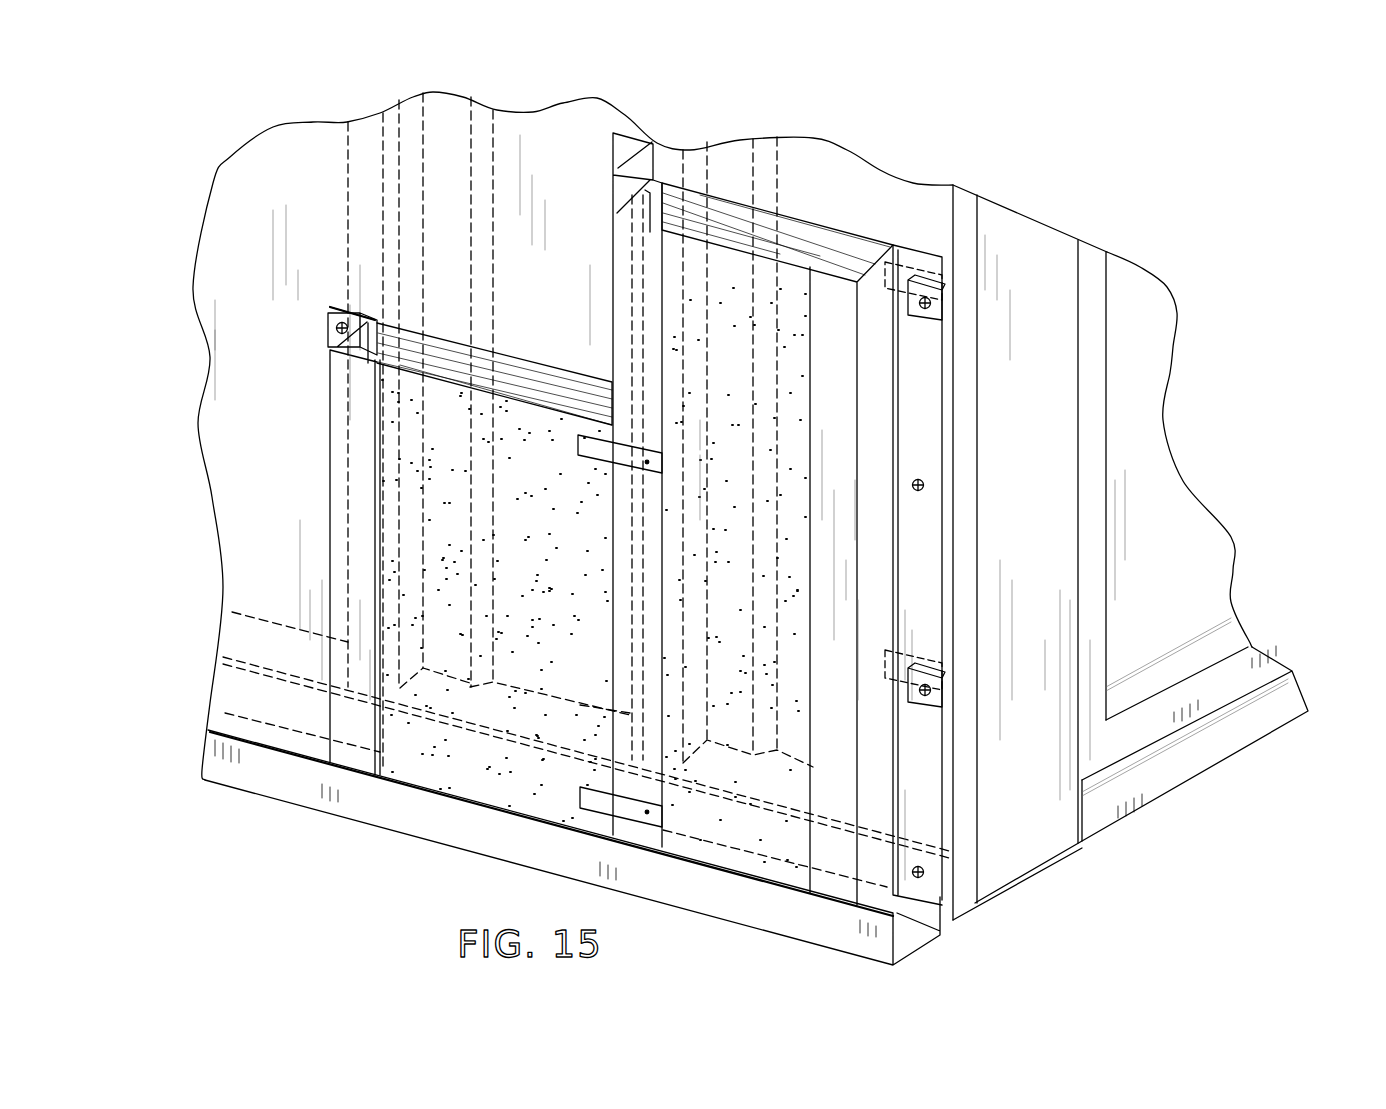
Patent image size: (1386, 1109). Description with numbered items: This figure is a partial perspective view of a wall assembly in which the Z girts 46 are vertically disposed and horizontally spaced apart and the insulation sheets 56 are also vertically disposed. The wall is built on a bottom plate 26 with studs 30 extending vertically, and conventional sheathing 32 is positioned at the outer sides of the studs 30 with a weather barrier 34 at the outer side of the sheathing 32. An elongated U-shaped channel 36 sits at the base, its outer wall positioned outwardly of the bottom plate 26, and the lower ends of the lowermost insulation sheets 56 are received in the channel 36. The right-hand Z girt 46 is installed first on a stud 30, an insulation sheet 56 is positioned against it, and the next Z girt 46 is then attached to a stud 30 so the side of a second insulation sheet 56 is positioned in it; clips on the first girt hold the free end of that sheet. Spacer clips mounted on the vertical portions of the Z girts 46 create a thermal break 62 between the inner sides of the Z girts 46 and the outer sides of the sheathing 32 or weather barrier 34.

The bottom plate 26 is at (1183, 782).
The stud 30 is at (1040, 472).
The sheathing 32 is at (972, 217).
The weather barrier 34 is at (947, 281).
The channel 36 is at (806, 946).
The Z girt 46 is at (652, 156).
The insulation sheet 56 is at (813, 223).
The thermal break 62 is at (952, 553).